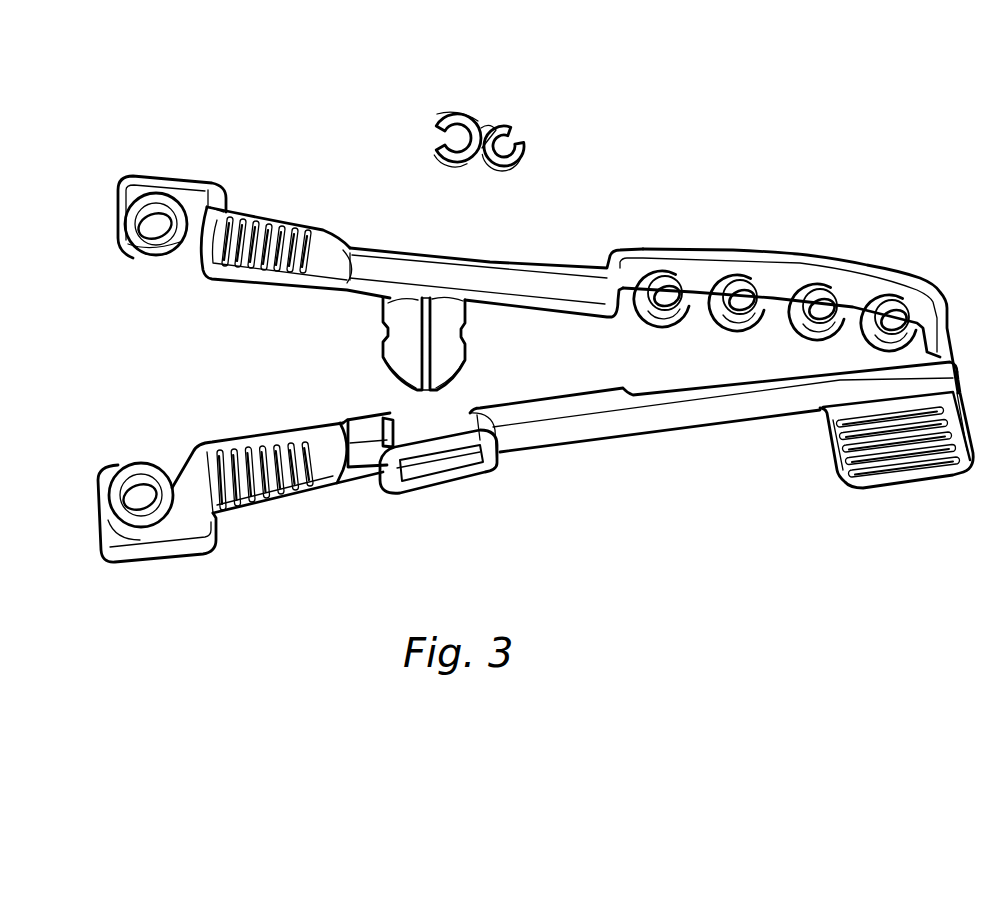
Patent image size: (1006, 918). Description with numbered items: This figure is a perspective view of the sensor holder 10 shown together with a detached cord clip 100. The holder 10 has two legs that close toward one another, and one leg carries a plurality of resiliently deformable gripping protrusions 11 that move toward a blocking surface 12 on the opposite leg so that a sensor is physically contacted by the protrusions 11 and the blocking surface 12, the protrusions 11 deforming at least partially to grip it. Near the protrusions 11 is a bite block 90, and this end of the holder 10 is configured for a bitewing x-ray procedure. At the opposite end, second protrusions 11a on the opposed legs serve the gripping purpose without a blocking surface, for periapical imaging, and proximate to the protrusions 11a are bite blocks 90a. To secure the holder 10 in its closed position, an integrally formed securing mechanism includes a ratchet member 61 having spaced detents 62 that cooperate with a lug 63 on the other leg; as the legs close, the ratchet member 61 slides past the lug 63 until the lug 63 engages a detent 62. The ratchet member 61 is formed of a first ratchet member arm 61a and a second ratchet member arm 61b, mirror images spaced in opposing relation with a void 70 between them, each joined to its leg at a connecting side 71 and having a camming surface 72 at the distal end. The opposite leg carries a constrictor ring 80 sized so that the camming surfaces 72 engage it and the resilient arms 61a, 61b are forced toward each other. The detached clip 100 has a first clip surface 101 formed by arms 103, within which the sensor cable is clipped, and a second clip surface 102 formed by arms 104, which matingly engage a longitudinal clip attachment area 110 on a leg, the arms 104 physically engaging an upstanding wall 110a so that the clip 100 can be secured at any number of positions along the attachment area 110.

The sensor holder 10 is at (754, 181).
The gripping protrusion 11 is at (937, 267).
The second protrusion 11a is at (162, 257).
The blocking surface 12 is at (673, 390).
The ratchet member 61 is at (385, 360).
The first ratchet member arm 61a is at (403, 310).
The second ratchet member arm 61b is at (447, 363).
The detent 62 is at (385, 327).
The lug 63 is at (403, 420).
The void 70 is at (412, 310).
The connecting side 71 is at (424, 318).
The camming surface 72 is at (397, 382).
The constrictor ring 80 is at (440, 443).
The bite block 90 is at (907, 477).
The bite block 90a is at (250, 227).
The clip 100 is at (523, 150).
The first clip surface 101 is at (497, 127).
The second clip surface 102 is at (450, 130).
The arm 103 is at (487, 117).
The arm 104 is at (465, 110).
The longitudinal clip attachment area 110 is at (543, 293).
The upstanding wall 110a is at (522, 270).